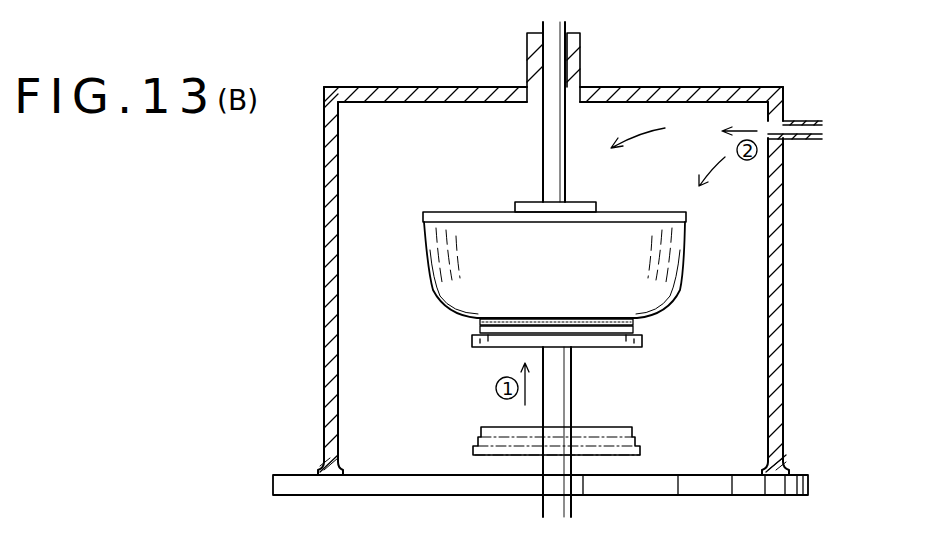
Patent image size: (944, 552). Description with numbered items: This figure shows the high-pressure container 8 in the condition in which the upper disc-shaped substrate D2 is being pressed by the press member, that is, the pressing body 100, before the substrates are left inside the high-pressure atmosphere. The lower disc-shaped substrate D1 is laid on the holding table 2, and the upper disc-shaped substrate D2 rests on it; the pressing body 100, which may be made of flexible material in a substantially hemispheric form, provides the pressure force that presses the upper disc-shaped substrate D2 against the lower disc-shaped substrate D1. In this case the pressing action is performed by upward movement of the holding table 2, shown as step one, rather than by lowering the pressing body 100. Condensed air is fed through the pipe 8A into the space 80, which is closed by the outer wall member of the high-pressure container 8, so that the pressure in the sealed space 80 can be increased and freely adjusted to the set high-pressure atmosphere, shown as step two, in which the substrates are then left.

The high-pressure container 8 is at (324, 237).
The space 80 is at (431, 184).
The gas inlet pipe 8A is at (808, 128).
The pressing body 100 is at (683, 267).
The holding table 2 is at (643, 341).
The lower disc-shaped substrate D1 is at (480, 329).
The upper disc-shaped substrate D2 is at (480, 321).